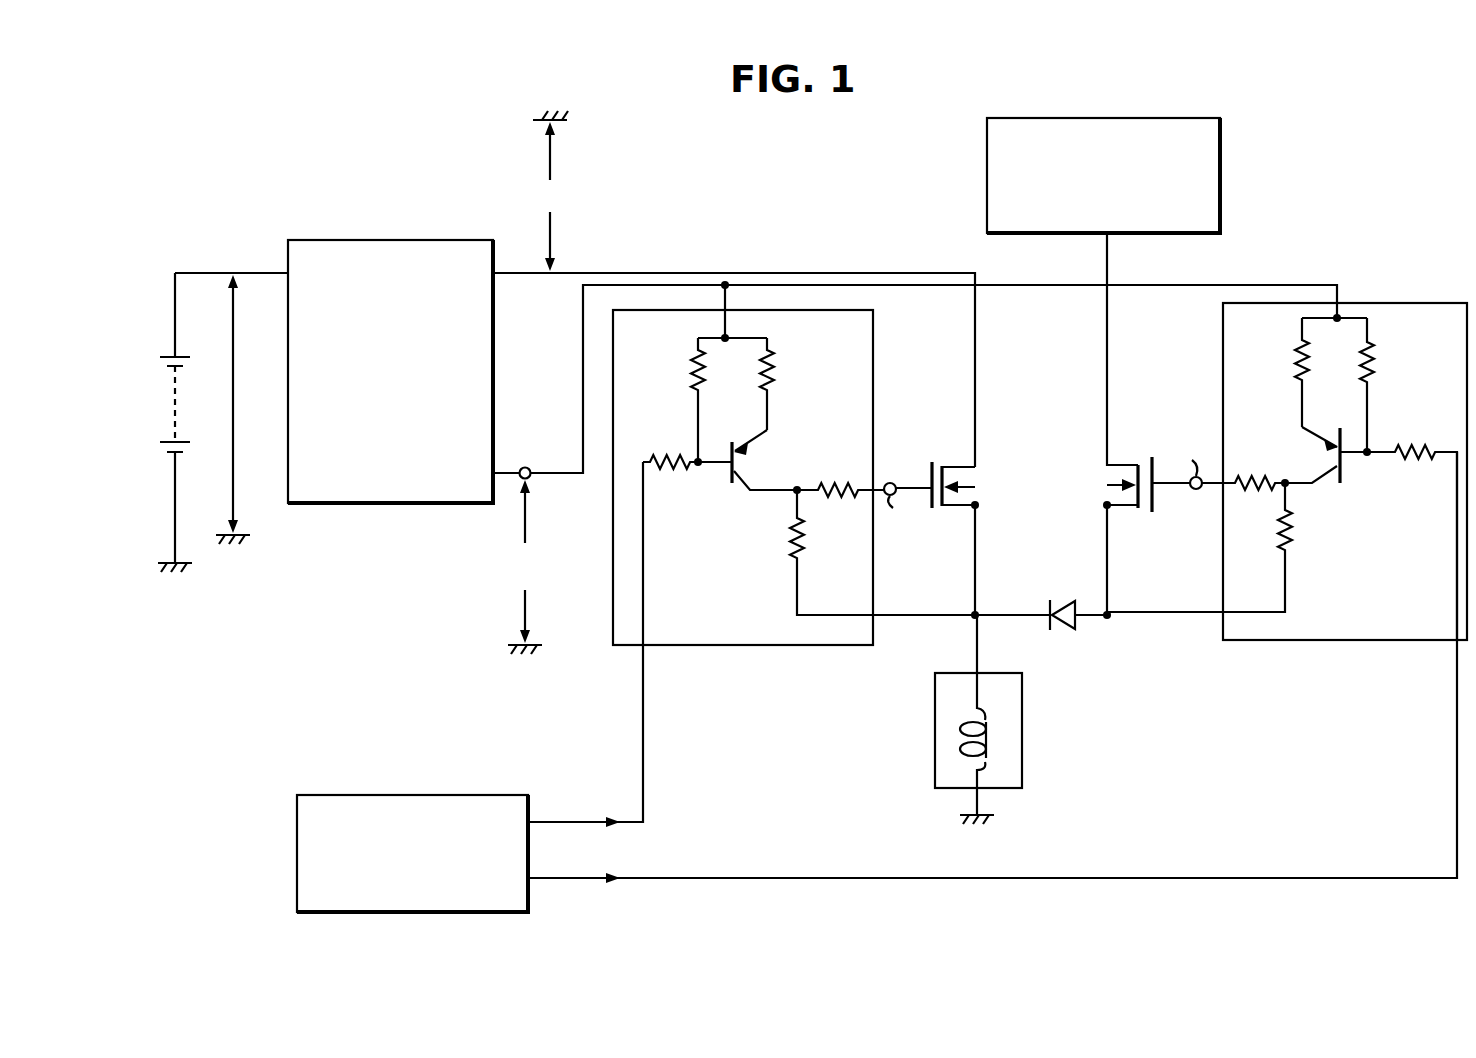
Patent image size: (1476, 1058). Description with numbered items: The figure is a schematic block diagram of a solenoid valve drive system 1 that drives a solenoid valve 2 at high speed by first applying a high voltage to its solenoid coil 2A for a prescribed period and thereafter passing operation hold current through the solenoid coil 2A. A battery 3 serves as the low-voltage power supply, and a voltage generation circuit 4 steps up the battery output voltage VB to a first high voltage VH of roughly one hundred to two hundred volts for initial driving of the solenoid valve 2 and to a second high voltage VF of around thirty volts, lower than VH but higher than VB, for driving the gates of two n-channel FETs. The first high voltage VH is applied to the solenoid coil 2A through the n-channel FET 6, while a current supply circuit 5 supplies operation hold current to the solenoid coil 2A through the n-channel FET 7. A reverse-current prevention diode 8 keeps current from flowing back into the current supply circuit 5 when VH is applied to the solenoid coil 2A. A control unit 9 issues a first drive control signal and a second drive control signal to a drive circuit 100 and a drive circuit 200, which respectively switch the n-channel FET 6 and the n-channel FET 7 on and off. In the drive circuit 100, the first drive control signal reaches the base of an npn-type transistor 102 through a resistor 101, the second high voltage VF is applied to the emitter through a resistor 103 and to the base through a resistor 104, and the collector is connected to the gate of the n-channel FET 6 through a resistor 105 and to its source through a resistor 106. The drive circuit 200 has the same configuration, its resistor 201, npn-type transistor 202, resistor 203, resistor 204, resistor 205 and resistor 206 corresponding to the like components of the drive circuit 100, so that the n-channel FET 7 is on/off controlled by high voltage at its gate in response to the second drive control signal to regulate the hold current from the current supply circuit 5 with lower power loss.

The solenoid valve drive system 1 is at (1303, 157).
The solenoid valve 2 is at (1002, 719).
The solenoid coil 2A is at (992, 725).
The battery 3 is at (177, 398).
The voltage generation circuit 4 is at (382, 252).
The current supply circuit 5 is at (1220, 185).
The n-channel FET 6 is at (933, 463).
The n-channel FET 7 is at (1100, 482).
The reverse-current prevention diode 8 is at (1062, 626).
The control unit 9 is at (416, 795).
The drive circuit 100 is at (831, 465).
The resistor 101 is at (676, 466).
The npn-type transistor 102 is at (750, 458).
The resistor 103 is at (771, 379).
The resistor 104 is at (692, 374).
The resistor 105 is at (835, 496).
The resistor 106 is at (790, 537).
The drive circuit 200 is at (1287, 455).
The resistor 201 is at (1414, 458).
The npn-type transistor 202 is at (1329, 486).
The resistor 203 is at (1297, 362).
The resistor 204 is at (1371, 362).
The resistor 205 is at (1247, 478).
The resistor 206 is at (1292, 532).